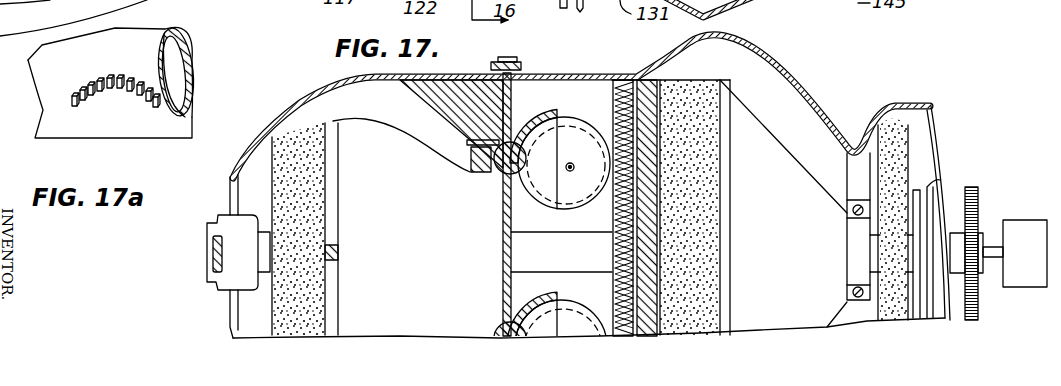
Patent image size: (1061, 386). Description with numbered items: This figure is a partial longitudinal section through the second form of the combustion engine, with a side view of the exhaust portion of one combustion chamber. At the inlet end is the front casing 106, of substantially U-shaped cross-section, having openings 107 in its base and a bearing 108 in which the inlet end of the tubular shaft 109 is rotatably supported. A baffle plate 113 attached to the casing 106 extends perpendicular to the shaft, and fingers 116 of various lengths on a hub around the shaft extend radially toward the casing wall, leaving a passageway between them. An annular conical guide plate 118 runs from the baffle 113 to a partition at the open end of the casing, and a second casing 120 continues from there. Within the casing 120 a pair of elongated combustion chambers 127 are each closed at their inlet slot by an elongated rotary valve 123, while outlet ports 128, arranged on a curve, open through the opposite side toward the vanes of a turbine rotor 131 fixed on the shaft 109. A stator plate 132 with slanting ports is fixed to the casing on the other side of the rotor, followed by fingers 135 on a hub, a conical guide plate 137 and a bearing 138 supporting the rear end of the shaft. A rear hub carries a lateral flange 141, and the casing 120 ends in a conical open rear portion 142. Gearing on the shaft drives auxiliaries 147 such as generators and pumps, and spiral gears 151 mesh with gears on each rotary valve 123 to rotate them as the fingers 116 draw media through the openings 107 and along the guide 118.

In FIG. 17, the front casing 106 is at (262, 132).
In FIG. 17, the openings 107 is at (236, 192).
In FIG. 17, the bearing 108 is at (228, 276).
In FIG. 17, the tubular shaft 109 is at (560, 244).
In FIG. 17, the baffle plate 113 is at (337, 119).
In FIG. 17, the fingers 116 is at (303, 158).
In FIG. 17, the annular conical guide plate 118 is at (390, 151).
In FIG. 17, the second casing 120 is at (690, 45).
In FIG. 17, the elongated rotary valves 123 is at (516, 160).
In FIG. 17a, the elongated combustion chambers 127 is at (172, 110).
In FIG. 17, the elongated combustion chambers 127 is at (573, 137).
In FIG. 17a, the outlet ports 128 is at (147, 101).
In FIG. 17, the turbine rotor 131 is at (633, 92).
In FIG. 17, the stator plate 132 is at (721, 76).
In FIG. 17, the fingers 135 is at (722, 83).
In FIG. 17, the conical guide plate 137 is at (757, 153).
In FIG. 17, the bearing 138 is at (856, 251).
In FIG. 17, the lateral flange 141 is at (903, 157).
In FIG. 17, the conical open end rear portion 142 is at (788, 66).
In FIG. 17, the auxiliaries 147 is at (1017, 230).
In FIG. 17, the spiral gears 151 is at (466, 143).